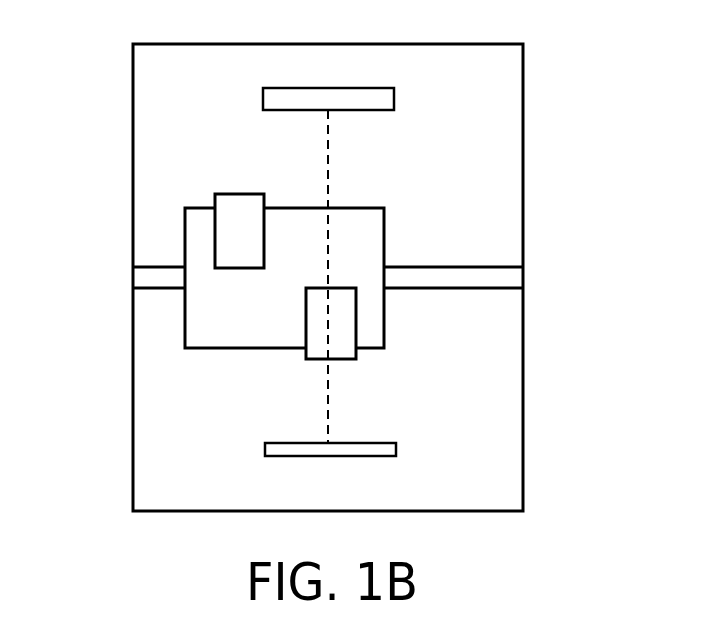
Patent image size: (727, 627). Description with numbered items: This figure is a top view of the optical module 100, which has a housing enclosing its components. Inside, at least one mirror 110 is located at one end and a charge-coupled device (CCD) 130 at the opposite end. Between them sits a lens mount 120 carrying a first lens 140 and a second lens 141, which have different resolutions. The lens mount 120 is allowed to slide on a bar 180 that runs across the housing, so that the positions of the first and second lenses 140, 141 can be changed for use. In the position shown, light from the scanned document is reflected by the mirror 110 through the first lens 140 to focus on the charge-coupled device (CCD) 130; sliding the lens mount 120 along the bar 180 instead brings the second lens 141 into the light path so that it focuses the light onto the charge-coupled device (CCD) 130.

The optical module 100 is at (489, 33).
The mirror 110 is at (394, 98).
The lens mount 120 is at (384, 232).
The charge-coupled device (CCD) 130 is at (396, 448).
The first lens 140 is at (356, 318).
The second lens 141 is at (215, 222).
The bar 180 is at (162, 292).